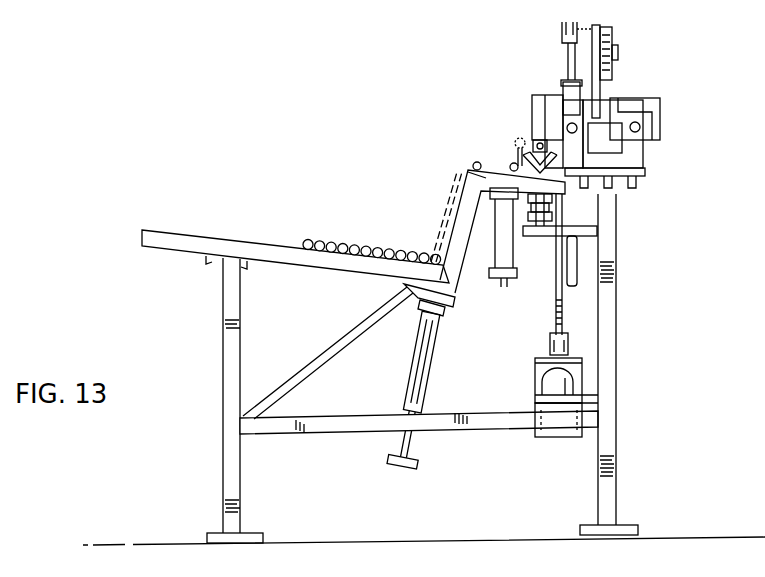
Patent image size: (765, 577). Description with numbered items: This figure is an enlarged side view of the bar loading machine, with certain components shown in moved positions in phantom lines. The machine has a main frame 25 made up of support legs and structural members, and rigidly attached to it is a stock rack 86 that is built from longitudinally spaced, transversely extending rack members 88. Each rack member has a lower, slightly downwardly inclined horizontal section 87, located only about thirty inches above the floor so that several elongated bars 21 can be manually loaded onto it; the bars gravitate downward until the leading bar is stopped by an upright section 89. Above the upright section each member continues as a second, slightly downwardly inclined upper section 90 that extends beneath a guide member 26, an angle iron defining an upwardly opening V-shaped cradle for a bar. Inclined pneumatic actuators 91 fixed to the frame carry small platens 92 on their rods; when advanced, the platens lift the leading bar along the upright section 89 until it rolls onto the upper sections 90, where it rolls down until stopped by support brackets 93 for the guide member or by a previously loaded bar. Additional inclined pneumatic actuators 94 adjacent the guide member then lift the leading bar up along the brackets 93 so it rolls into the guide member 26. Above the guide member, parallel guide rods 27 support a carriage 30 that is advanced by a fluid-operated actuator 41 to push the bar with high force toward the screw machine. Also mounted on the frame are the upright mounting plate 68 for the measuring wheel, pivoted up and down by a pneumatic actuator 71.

The elongated bars 21 is at (340, 247).
The frame 25 is at (617, 327).
The guide member 26 is at (563, 188).
The guide rods 27 is at (639, 131).
The carriage 30 is at (626, 96).
The second actuator 41 is at (542, 392).
The mounting plate 68 is at (597, 60).
The pneumatic actuator 71 is at (560, 108).
The stock rack 86 is at (239, 212).
The horizontal sections 87 is at (292, 262).
The rack members 88 is at (326, 274).
The upright section 89 is at (458, 252).
The upper sections 90 is at (483, 207).
The pneumatic actuators 91 is at (418, 357).
The platens 92 is at (462, 168).
The support brackets 93 is at (541, 224).
The pneumatic actuators 94 is at (503, 282).